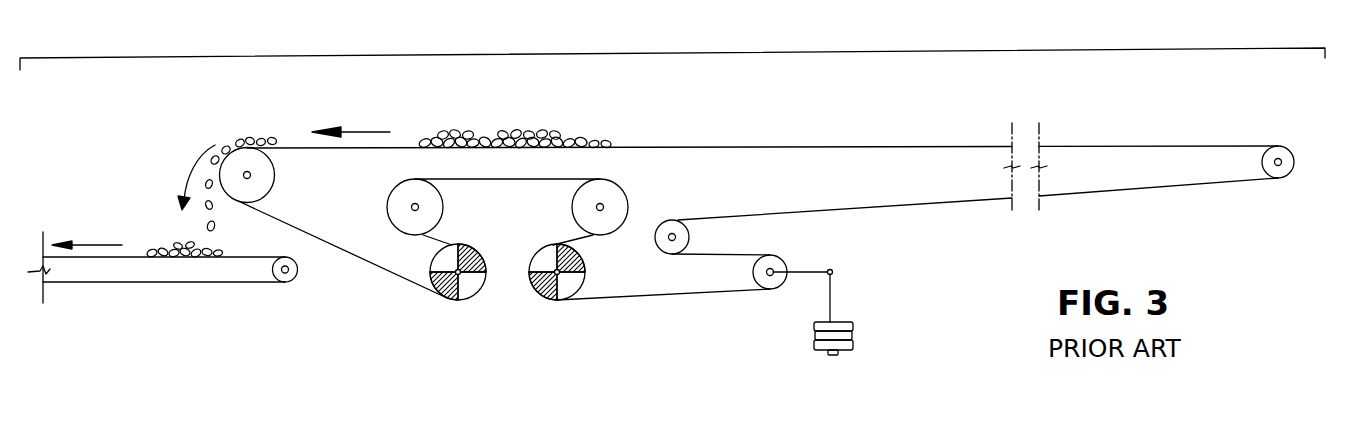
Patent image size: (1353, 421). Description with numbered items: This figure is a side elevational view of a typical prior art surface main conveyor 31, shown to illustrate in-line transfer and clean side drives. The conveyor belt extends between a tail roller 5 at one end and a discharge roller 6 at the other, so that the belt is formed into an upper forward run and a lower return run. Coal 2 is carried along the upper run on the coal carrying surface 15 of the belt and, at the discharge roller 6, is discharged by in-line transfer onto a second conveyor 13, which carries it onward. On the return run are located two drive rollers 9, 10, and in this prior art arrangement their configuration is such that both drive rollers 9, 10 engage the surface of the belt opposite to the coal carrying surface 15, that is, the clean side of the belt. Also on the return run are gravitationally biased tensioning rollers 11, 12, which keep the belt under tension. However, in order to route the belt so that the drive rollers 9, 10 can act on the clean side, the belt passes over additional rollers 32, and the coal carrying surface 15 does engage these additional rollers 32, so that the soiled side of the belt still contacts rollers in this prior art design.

The coal 2 is at (511, 137).
The tail roller 5 is at (1278, 146).
The discharge roller 6 is at (260, 184).
The drive roller 9 is at (478, 288).
The drive roller 10 is at (573, 288).
The tensioning roller 11 is at (686, 236).
The tensioning roller 12 is at (779, 267).
The second conveyor 13 is at (153, 285).
The coal carrying surface 15 is at (362, 258).
The surface main conveyor 31 is at (871, 142).
The additional rollers 32 is at (588, 207).